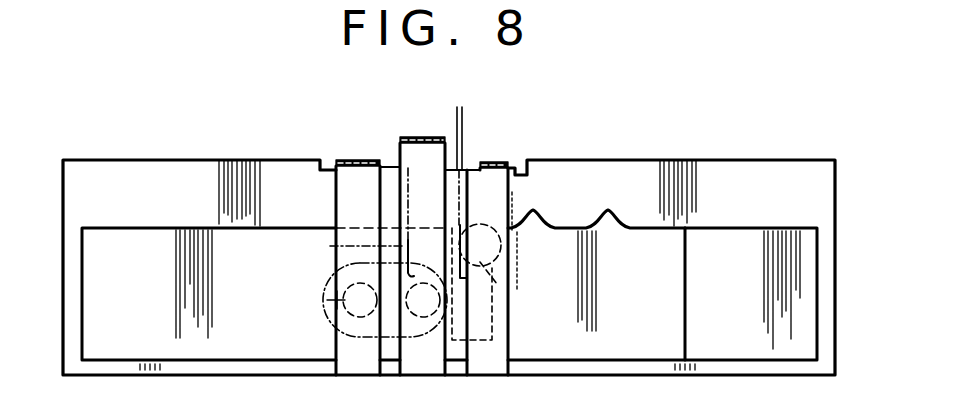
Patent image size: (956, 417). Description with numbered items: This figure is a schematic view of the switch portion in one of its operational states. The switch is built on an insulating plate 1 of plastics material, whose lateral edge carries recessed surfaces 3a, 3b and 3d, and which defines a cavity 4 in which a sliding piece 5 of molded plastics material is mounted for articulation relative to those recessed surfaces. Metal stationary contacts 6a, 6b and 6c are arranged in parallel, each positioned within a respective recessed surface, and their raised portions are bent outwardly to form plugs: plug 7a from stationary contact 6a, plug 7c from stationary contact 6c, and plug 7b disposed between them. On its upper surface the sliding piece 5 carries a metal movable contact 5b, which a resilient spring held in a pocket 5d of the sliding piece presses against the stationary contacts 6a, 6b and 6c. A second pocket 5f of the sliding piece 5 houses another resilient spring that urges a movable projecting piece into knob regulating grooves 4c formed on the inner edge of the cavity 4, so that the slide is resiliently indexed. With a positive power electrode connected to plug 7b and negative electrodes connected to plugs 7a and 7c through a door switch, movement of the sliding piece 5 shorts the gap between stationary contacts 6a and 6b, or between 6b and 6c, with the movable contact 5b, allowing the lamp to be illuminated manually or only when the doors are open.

The insulating plate 1 is at (191, 166).
The recessed surface 3a is at (358, 158).
The recessed surface 3b is at (420, 134).
The recessed surface 3d is at (497, 161).
The cavity 4 is at (760, 228).
The knob regulating grooves 4c is at (535, 230).
The sliding piece 5 is at (670, 303).
The movable contact 5b is at (324, 300).
The pocket 5d is at (498, 290).
The pocket 5f is at (505, 338).
The stationary contact 6a is at (342, 178).
The stationary contact 6b is at (441, 156).
The stationary contact 6c is at (518, 180).
The plug 7a is at (331, 246).
The plug 7b is at (464, 121).
The plug 7c is at (510, 194).